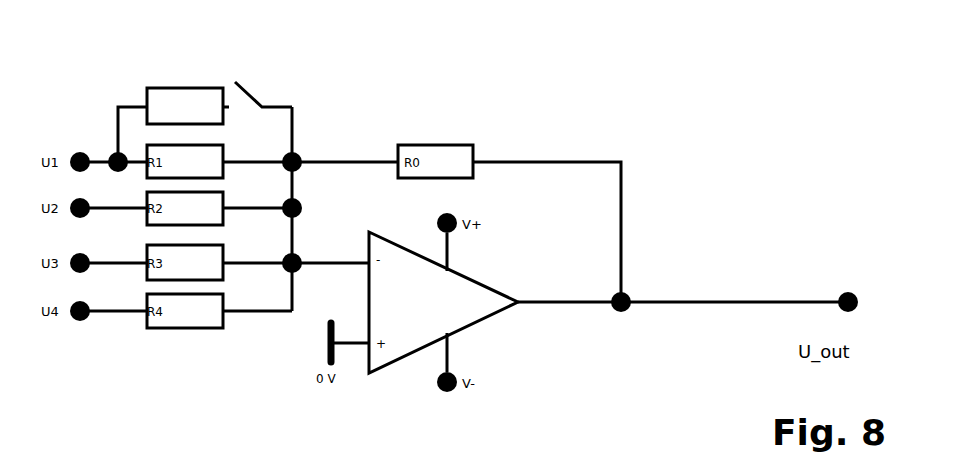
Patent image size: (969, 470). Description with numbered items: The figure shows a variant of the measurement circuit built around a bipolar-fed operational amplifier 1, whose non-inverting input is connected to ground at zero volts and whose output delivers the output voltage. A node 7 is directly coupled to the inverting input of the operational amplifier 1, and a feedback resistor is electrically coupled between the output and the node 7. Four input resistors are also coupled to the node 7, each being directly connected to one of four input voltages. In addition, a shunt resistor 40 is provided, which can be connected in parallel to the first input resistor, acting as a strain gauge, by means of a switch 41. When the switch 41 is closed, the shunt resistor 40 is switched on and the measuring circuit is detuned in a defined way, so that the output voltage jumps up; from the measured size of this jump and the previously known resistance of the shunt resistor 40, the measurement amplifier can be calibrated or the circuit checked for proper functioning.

The shunt resistor 40 is at (186, 92).
The switch 41 is at (247, 78).
The node 7 is at (297, 148).
The operational amplifier 1 is at (483, 278).